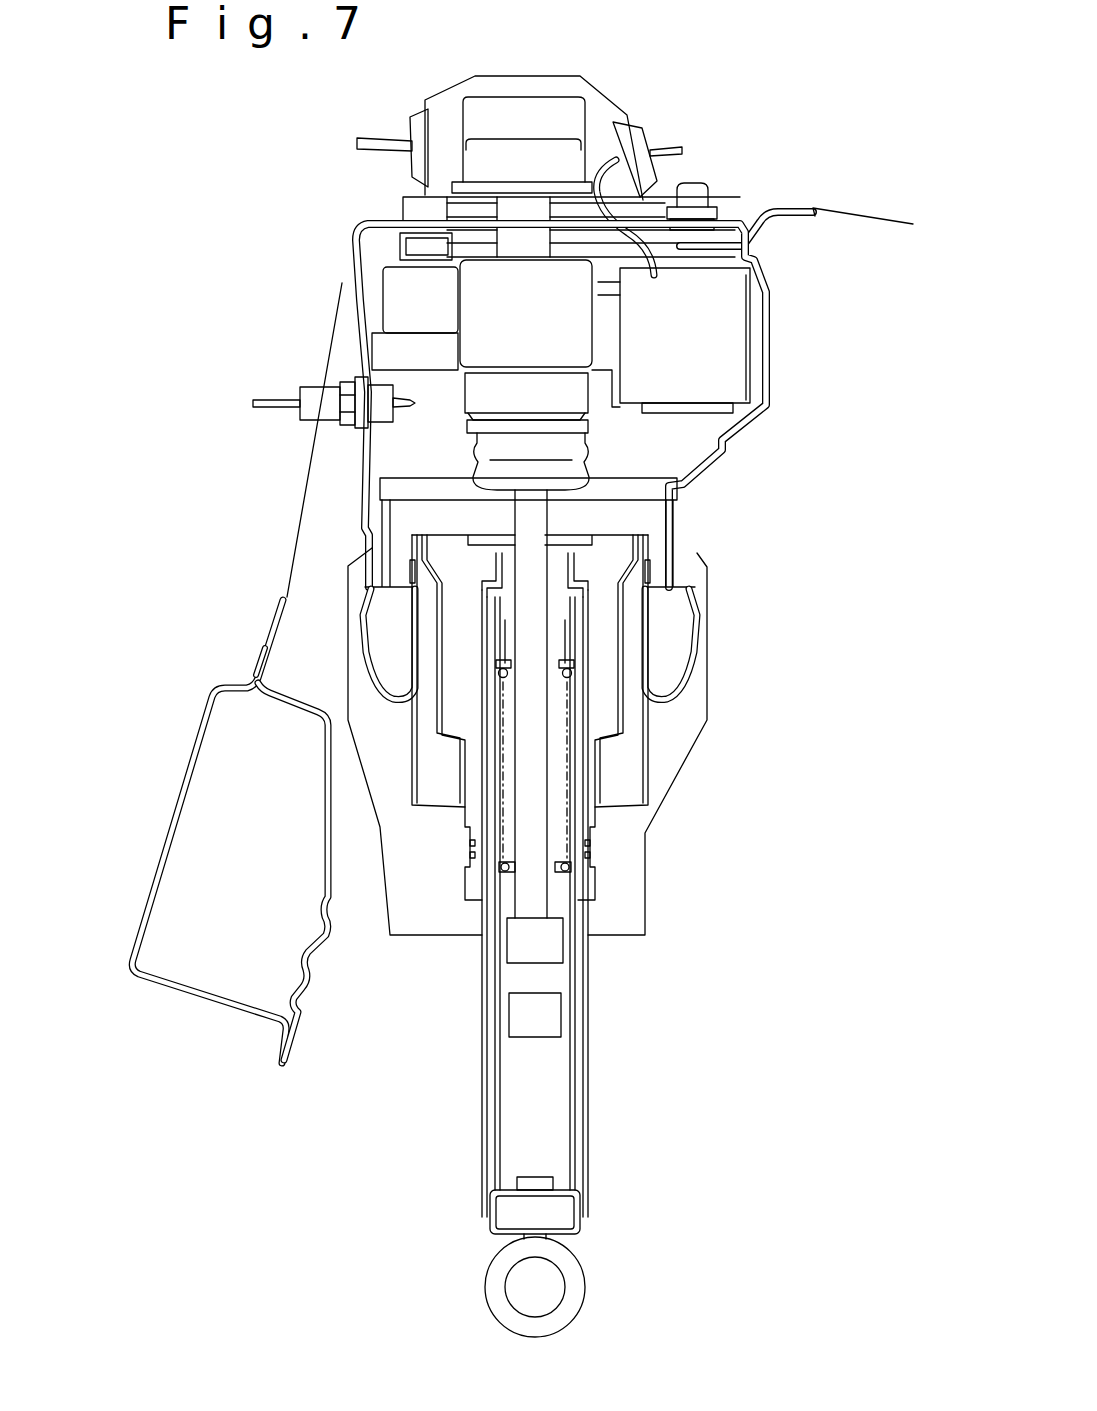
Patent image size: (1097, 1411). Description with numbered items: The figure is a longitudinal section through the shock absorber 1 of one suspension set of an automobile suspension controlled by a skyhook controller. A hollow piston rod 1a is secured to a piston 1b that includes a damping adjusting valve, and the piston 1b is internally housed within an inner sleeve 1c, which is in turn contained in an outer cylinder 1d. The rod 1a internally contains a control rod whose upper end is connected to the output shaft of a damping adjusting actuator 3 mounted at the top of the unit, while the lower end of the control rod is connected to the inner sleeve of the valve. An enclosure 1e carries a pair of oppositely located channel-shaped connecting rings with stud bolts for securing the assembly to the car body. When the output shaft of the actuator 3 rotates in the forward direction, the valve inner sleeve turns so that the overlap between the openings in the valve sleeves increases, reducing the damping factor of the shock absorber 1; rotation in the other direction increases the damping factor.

The shock absorber 1 is at (700, 555).
The hollow piston rod 1a is at (543, 525).
The piston 1b is at (545, 1022).
The inner sleeve 1c is at (568, 1123).
The outer cylinder 1d is at (588, 1083).
The enclosure 1e is at (375, 278).
The damping adjusting actuator 3 is at (547, 155).